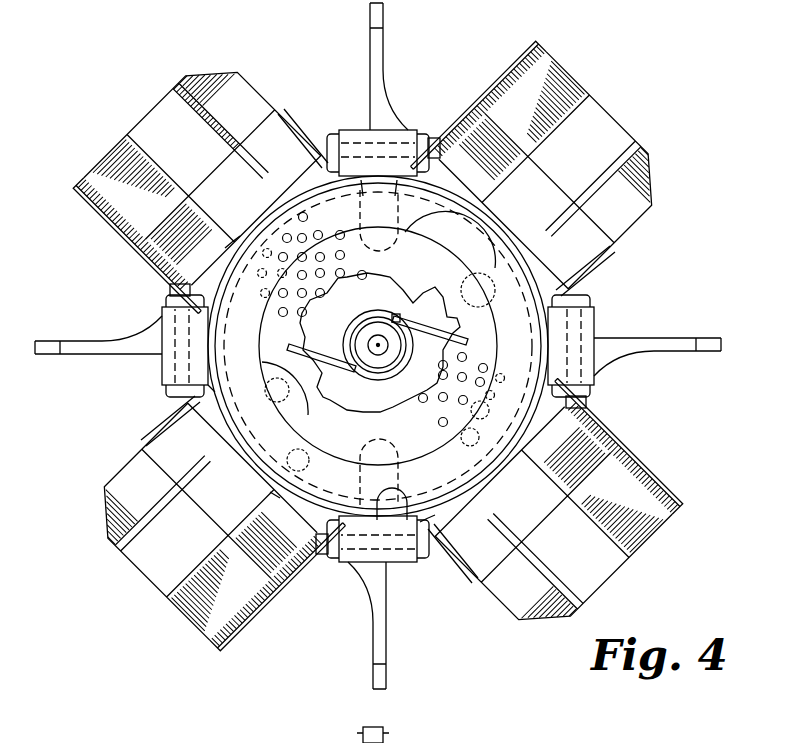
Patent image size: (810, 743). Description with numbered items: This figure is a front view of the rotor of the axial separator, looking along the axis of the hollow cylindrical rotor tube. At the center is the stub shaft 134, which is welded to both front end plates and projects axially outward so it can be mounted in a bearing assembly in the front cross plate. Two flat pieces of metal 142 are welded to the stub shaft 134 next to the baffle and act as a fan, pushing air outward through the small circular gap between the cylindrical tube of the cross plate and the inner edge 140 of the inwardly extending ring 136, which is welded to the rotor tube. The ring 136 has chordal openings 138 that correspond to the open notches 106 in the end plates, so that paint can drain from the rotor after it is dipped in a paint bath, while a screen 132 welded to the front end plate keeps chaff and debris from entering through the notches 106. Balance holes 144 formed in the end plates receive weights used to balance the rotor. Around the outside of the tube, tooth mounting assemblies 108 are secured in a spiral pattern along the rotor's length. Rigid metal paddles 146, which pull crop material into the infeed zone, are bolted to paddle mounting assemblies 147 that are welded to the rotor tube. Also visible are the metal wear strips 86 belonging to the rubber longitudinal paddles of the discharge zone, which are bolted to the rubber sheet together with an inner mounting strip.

The metal wear strips 86 is at (362, 740).
The open notches 106 is at (424, 135).
The tooth mounting assemblies 108 is at (333, 115).
The screen 132 is at (480, 212).
The stub shaft 134 is at (386, 330).
The inwardly extending ring 136 is at (212, 386).
The chordal openings 138 is at (232, 252).
The inner edge 140 is at (350, 406).
The flat pieces of metal 142 is at (468, 243).
The balance holes 144 is at (272, 492).
The rigid metal paddles 146 is at (157, 127).
The paddle mounting assemblies 147 is at (266, 145).